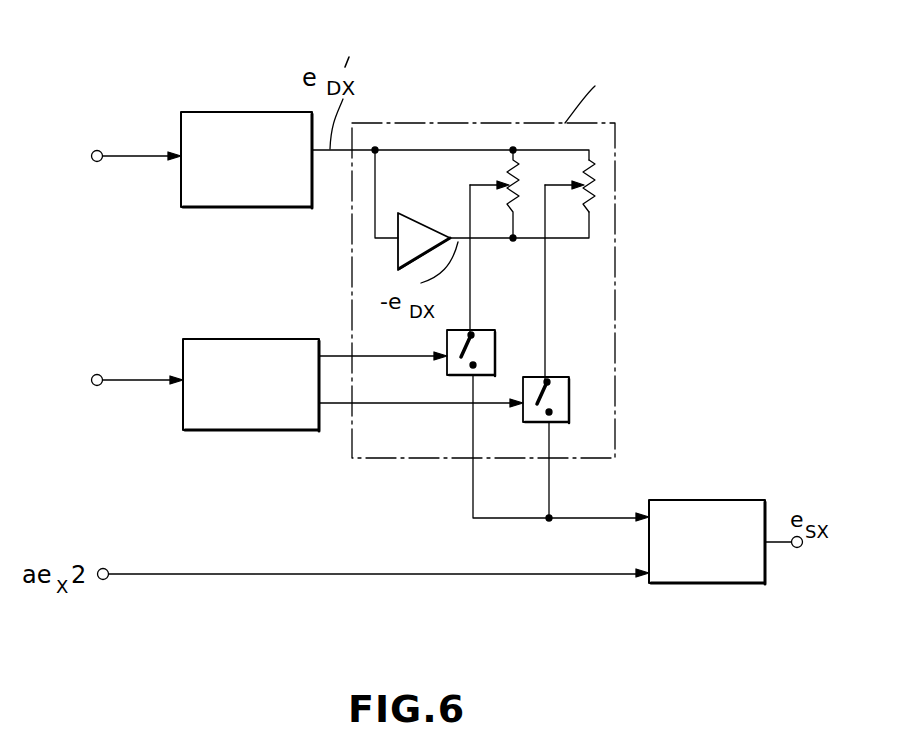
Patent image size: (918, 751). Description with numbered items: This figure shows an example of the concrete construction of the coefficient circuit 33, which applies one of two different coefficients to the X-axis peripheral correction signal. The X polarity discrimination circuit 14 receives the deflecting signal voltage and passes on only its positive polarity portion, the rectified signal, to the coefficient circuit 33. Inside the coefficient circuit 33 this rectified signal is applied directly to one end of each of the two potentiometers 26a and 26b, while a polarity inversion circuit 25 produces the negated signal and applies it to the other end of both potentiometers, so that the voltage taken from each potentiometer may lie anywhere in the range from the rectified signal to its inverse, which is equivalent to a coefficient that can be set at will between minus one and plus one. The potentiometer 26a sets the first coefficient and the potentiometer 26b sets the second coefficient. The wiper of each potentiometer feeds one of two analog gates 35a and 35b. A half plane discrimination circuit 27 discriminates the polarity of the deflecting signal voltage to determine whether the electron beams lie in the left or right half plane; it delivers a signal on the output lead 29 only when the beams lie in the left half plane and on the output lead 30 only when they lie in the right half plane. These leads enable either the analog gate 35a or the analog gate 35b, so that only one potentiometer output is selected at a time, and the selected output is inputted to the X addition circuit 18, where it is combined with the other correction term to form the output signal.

The polarity discrimination circuit 14 is at (212, 112).
The coefficient circuit 33 is at (480, 122).
The polarity inversion circuit 25 is at (410, 228).
The potentiometer 26a is at (512, 186).
The potentiometer 26b is at (592, 203).
The half plane discrimination circuit 27 is at (240, 338).
The output lead 29 is at (340, 352).
The output lead 30 is at (340, 406).
The analog gate 35a is at (482, 331).
The analog gate 35b is at (553, 378).
The addition circuit 18 is at (720, 500).